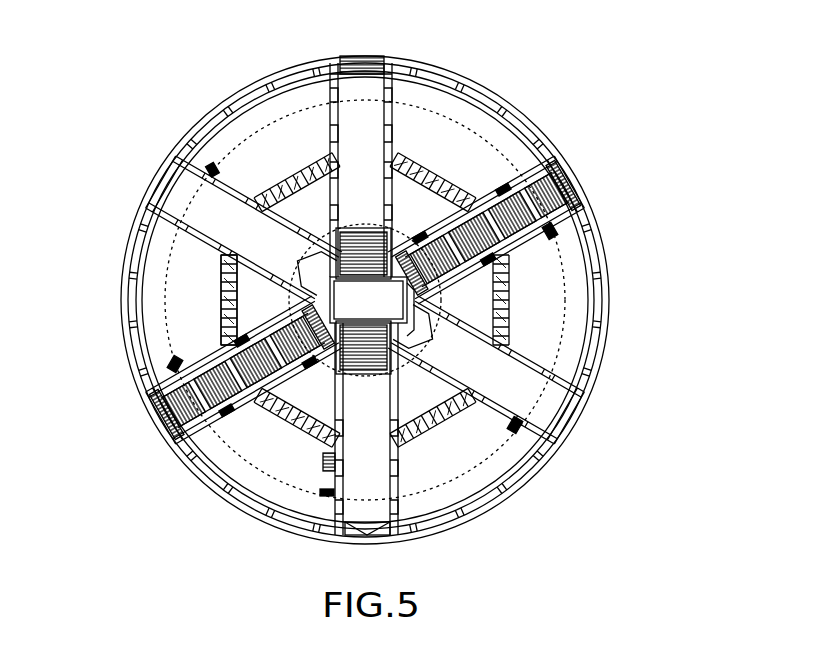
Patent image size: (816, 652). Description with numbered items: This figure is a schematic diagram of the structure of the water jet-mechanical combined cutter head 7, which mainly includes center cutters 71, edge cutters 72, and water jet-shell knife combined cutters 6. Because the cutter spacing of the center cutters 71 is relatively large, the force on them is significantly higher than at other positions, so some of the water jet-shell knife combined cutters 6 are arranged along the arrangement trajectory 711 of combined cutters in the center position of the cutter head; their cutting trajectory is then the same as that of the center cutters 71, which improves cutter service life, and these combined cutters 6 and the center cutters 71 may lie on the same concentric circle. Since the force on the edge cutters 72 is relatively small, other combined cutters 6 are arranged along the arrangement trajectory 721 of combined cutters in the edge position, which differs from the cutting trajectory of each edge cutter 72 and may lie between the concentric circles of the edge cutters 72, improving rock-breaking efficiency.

The water jet-shell knife combined cutters 6 is at (553, 228).
The water jet-mechanical combined cutter head 7 is at (222, 121).
The center cutters 71 is at (223, 305).
The trajectory of arranging combined cutters in center position of the cutter head 711 is at (143, 403).
The edge cutters 72 is at (577, 175).
The trajectory of arranging combined cutters in edge position of the cutter head 721 is at (480, 457).